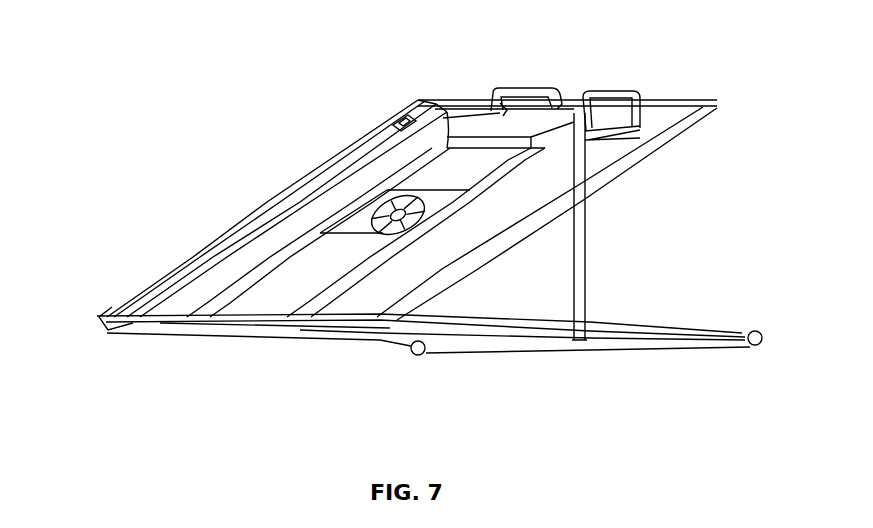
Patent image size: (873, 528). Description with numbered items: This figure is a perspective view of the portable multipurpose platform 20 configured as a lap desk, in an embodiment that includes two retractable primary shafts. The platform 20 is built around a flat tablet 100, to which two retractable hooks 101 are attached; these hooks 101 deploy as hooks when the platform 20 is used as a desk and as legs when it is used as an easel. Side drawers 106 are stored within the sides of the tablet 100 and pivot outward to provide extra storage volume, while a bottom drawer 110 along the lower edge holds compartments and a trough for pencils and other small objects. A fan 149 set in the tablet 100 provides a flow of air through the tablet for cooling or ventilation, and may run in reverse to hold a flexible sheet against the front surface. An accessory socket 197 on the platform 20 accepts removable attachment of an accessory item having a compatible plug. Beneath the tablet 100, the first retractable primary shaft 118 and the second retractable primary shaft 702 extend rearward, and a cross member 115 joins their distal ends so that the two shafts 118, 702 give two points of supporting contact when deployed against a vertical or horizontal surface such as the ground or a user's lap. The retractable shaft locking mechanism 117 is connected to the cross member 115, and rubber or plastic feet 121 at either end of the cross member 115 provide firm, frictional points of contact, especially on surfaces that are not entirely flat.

The multipurpose platform 20 is at (169, 102).
The tablet 100 is at (296, 178).
The retractable hooks 101 is at (522, 92).
The side drawers 106 is at (193, 257).
The bottom drawer 110 is at (111, 326).
The cross member 115 is at (585, 352).
The retractable shaft locking mechanism 117 is at (587, 272).
The first retractable primary shaft 118 is at (507, 318).
The feet 121 is at (427, 350).
The fan 149 is at (424, 222).
The accessory socket 197 is at (392, 113).
The second retractable primary shaft 702 is at (390, 318).